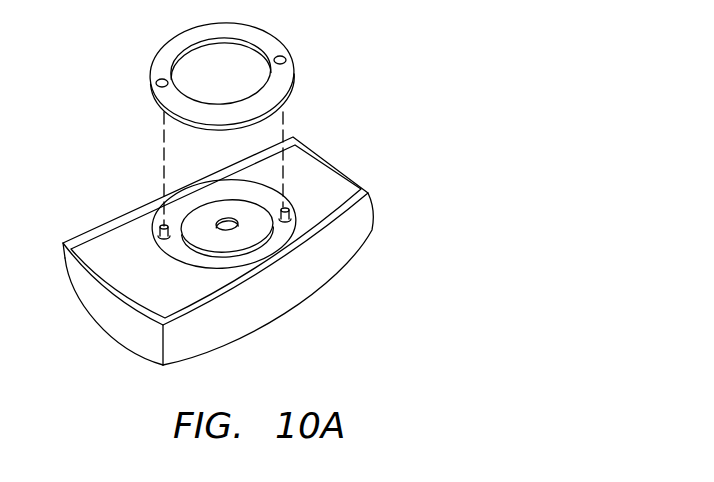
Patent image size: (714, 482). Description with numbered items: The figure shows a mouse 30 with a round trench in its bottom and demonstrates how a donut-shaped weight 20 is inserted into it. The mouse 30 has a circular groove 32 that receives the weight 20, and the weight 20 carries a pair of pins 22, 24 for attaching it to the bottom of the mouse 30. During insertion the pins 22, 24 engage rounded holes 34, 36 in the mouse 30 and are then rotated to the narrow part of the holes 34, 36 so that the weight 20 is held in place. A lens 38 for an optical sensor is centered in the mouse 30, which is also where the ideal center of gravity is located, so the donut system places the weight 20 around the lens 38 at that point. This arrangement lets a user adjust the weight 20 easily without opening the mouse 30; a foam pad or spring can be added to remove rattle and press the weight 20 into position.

The weight 20 is at (278, 44).
The pin 22 is at (286, 59).
The pin 24 is at (157, 81).
The mouse 30 is at (364, 240).
The circular groove 32 is at (182, 171).
The rounded hole 34 is at (289, 212).
The rounded hole 36 is at (158, 228).
The lens 38 is at (237, 229).